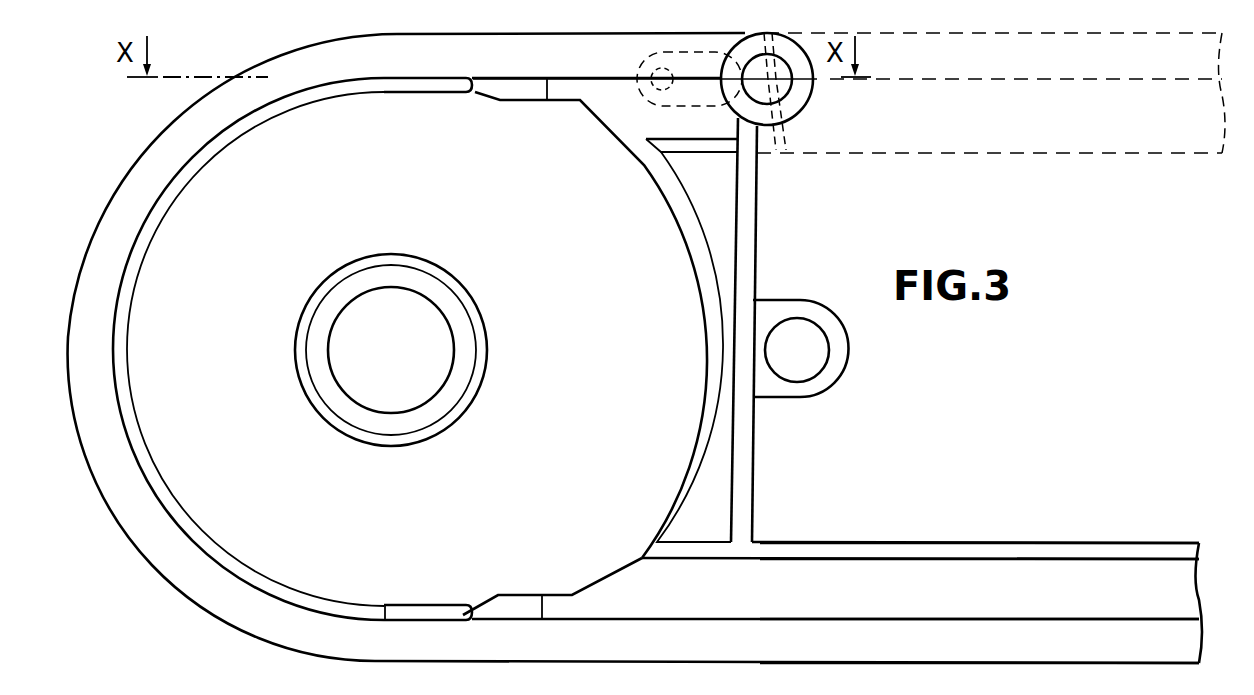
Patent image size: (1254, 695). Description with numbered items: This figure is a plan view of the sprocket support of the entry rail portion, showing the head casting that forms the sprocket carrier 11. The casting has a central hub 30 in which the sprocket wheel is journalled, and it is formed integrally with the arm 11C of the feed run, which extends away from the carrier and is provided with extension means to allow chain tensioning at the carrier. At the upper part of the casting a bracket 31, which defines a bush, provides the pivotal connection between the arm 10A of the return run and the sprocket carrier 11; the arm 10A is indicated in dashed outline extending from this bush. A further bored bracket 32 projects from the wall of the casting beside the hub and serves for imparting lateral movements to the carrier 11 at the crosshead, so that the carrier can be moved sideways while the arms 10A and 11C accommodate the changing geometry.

The sprocket carrier 11 is at (150, 157).
The arm 11C is at (942, 556).
The hub 30 is at (313, 303).
The bracket 31 is at (730, 42).
The bored bracket 32 is at (845, 362).
The arm 10A is at (907, 145).